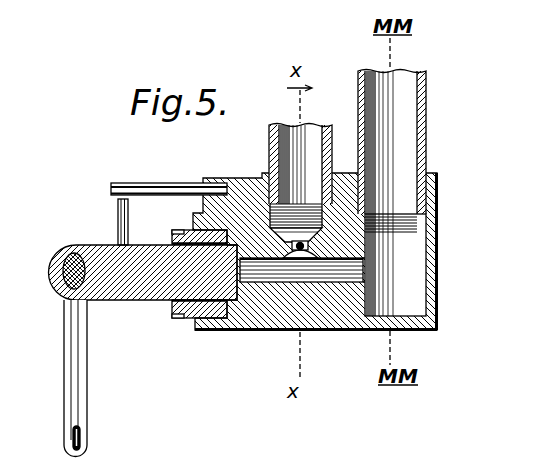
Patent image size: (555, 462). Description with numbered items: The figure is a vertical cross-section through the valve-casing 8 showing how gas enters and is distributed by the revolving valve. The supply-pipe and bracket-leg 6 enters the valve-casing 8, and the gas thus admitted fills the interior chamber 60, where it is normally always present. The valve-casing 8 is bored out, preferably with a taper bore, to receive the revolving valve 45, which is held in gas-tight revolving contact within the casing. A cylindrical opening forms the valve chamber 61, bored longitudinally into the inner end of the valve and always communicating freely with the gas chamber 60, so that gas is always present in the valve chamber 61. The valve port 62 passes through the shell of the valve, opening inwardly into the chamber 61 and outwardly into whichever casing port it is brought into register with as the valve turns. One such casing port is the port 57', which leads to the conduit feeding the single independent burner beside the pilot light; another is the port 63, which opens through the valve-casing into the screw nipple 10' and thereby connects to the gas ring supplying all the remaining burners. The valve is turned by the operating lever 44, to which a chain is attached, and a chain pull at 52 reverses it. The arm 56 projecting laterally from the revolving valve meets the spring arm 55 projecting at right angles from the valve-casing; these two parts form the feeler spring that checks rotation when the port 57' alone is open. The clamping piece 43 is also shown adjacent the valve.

The supply-pipe and bracket-leg 6 is at (426, 99).
The valve-casing 8 is at (437, 243).
The screw nipple 10' is at (311, 160).
The clamp nut 43 is at (179, 318).
The operating lever 44 is at (63, 377).
The revolving valve 45 is at (131, 300).
The chain pull 52 is at (82, 438).
The spring arm 55 is at (158, 183).
The arm 56 is at (117, 208).
The port 57' is at (314, 334).
The interior chamber 60 is at (412, 287).
The valve chamber 61 is at (258, 280).
The valve port 62 is at (285, 253).
The port 63 is at (305, 246).